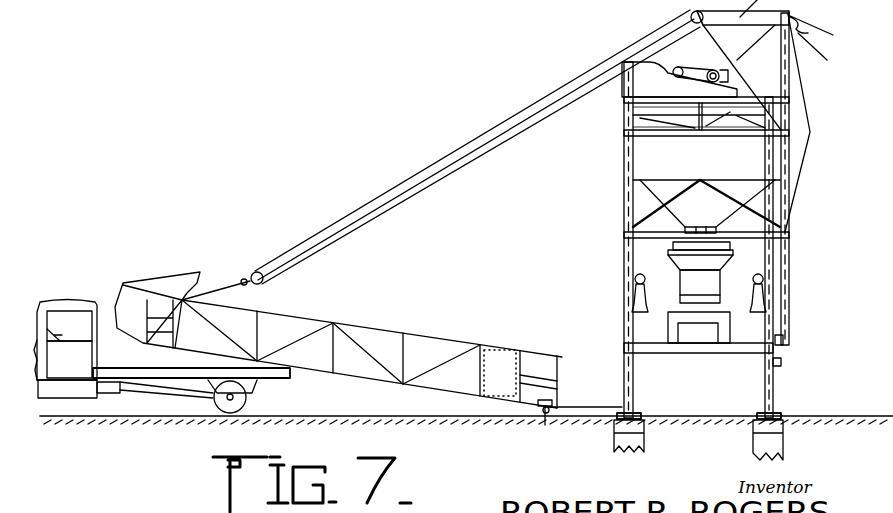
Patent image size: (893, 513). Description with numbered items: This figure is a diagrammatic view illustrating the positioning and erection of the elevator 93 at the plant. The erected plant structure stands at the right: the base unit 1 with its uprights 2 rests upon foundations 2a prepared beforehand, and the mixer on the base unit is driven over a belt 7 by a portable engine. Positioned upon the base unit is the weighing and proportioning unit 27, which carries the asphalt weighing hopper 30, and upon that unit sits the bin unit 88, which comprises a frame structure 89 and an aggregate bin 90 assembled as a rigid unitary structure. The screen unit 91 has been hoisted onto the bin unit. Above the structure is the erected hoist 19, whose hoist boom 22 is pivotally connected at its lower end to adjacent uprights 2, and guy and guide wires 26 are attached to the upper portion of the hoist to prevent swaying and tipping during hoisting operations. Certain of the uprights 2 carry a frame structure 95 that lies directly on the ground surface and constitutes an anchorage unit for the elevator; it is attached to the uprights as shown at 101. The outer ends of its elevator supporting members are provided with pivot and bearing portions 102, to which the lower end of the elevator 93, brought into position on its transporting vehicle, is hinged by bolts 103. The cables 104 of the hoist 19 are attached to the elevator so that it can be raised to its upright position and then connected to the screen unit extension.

The base unit 1 is at (709, 347).
The uprights 2 is at (634, 394).
The foundations 2a is at (640, 445).
The belt 7 is at (709, 328).
The hoist 19 is at (786, 214).
The hoist boom 22 is at (786, 254).
The guy and guide wires 26 is at (810, 30).
The weighing and proportioning unit 27 is at (625, 272).
The asphalt weighing hopper 30 is at (713, 283).
The bin unit 88 is at (752, 165).
The frame structure 89 is at (625, 202).
The aggregate bin 90 is at (648, 153).
The screen unit 91 is at (633, 78).
The elevator 93 is at (398, 335).
The frame structure 95 is at (583, 413).
The attachment 101 is at (543, 425).
The pivot and bearing portions 102 is at (551, 411).
The bolts 103 is at (541, 405).
The cables 104 is at (345, 221).